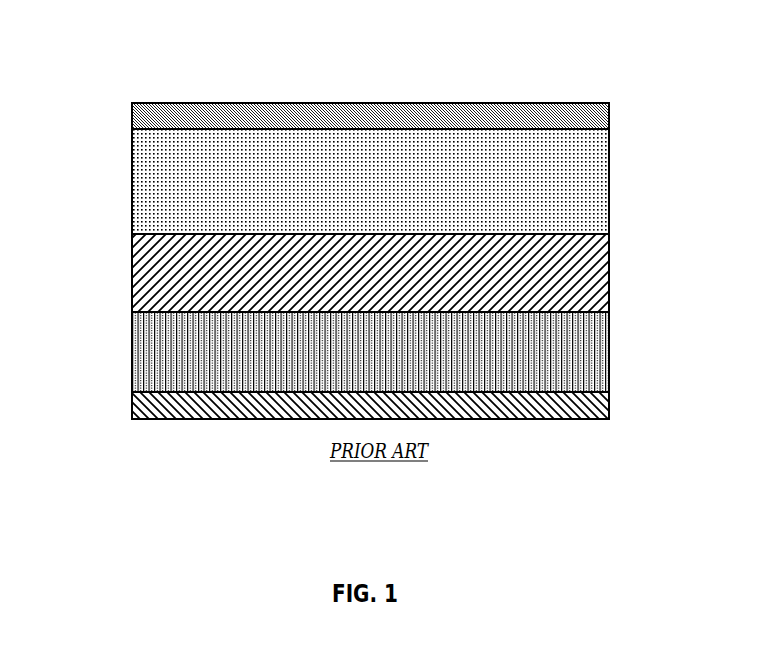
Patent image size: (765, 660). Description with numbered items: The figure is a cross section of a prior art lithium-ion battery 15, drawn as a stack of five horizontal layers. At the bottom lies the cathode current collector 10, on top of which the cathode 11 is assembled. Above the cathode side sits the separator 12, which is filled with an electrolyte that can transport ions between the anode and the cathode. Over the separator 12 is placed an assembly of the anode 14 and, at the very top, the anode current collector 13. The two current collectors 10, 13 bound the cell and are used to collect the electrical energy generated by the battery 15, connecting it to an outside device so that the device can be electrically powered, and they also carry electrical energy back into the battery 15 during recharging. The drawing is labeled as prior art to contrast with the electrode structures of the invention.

The cathode current collector 10 is at (180, 406).
The cathode 11 is at (150, 343).
The separator 12 is at (590, 270).
The anode current collector 13 is at (543, 110).
The anode 14 is at (155, 180).
The battery 15 is at (252, 472).